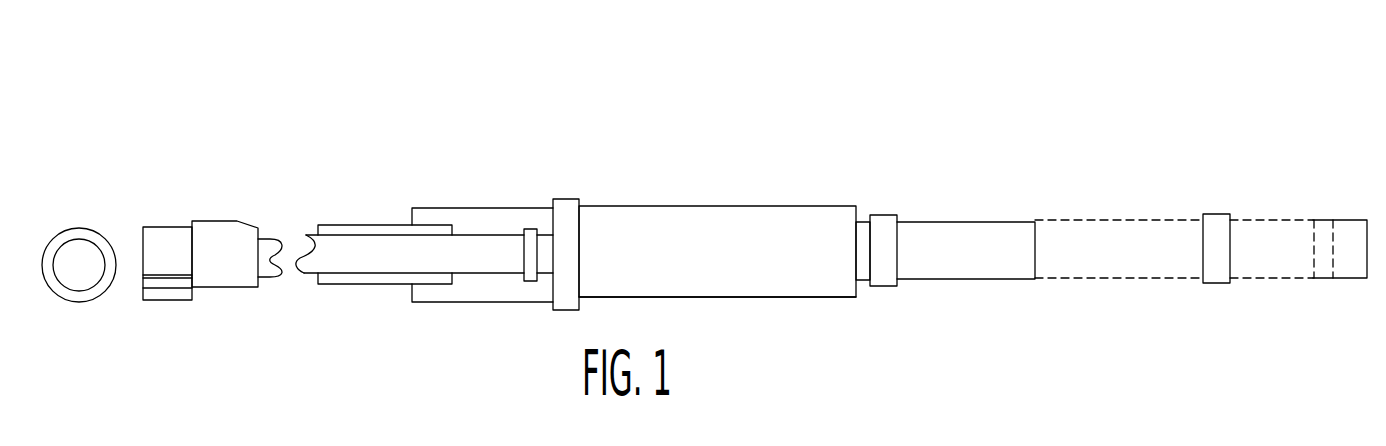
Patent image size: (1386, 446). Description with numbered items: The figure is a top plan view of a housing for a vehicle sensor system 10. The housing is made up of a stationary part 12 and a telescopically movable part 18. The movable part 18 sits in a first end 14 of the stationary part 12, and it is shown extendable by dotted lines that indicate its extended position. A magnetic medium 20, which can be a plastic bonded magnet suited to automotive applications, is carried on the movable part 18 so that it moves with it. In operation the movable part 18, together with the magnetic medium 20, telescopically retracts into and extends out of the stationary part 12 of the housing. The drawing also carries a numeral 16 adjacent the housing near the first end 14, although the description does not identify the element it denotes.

The sensor system 10 is at (676, 206).
The stationary part 12 is at (750, 265).
The first end 14 is at (797, 285).
The inner tube and sleeve bracket 16 is at (422, 292).
The telescopically movable part 18 is at (989, 261).
The magnetic medium 20 is at (863, 272).